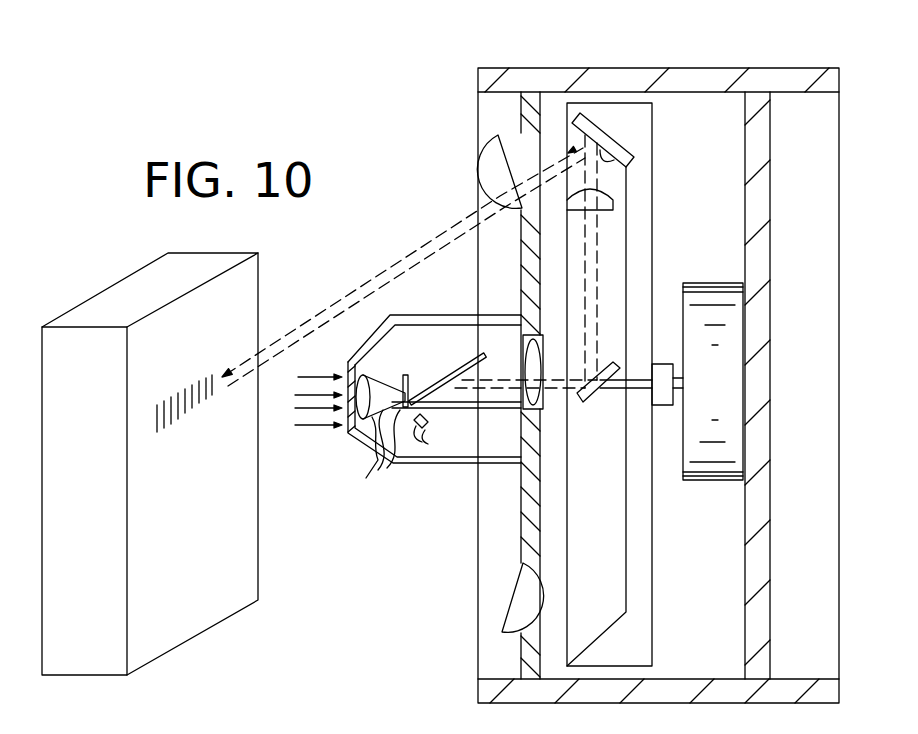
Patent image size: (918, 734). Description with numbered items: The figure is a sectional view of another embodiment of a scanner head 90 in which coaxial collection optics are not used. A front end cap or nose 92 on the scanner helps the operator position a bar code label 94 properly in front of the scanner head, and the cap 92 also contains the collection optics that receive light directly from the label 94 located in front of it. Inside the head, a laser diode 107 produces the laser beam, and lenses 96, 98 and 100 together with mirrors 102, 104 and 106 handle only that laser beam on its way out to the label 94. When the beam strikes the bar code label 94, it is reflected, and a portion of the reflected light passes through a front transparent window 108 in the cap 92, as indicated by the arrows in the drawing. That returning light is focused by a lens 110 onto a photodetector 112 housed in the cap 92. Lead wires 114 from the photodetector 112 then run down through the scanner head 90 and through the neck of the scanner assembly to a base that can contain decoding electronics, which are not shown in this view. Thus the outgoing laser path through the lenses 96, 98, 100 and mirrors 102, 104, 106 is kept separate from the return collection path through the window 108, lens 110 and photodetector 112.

The scanner head 90 is at (536, 34).
The front end cap 92 is at (418, 463).
The bar code label 94 is at (168, 432).
The lens 96 is at (541, 344).
The lens 98 is at (617, 202).
The lens 100 is at (500, 160).
The mirror 102 is at (490, 368).
The mirror 104 is at (613, 362).
The mirror 106 is at (627, 160).
The laser diode 107 is at (428, 435).
The front transparent window 108 is at (338, 412).
The lens 110 is at (365, 374).
The photodetector 112 is at (408, 382).
The lead wires 114 is at (398, 451).